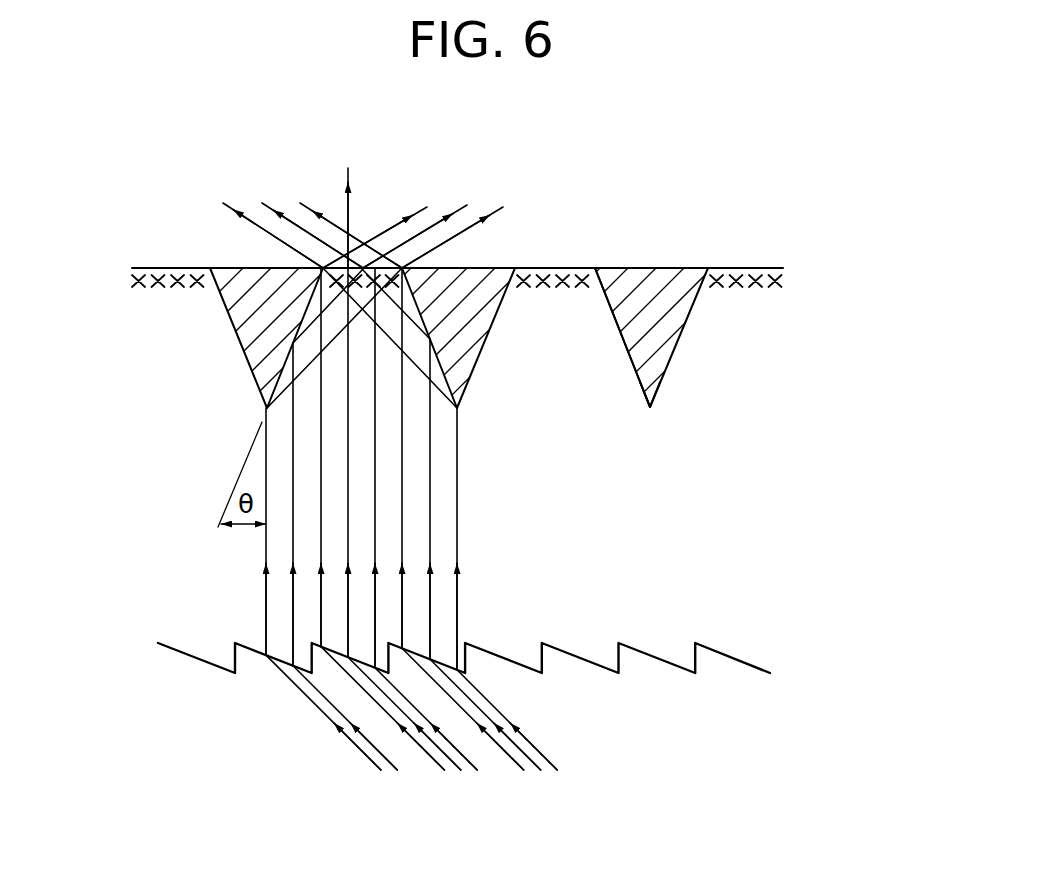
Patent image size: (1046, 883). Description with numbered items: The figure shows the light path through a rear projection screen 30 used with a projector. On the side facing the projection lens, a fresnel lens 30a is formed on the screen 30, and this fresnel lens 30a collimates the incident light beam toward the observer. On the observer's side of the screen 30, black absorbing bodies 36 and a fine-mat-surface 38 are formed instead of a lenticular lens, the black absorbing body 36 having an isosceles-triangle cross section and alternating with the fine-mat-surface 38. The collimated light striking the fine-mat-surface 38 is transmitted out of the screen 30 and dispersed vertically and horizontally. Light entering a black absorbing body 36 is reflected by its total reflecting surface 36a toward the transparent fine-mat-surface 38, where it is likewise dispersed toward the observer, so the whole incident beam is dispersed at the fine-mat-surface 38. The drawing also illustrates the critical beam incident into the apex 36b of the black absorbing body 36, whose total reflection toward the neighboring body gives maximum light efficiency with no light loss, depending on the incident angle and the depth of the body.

The screen 30 is at (727, 502).
The fresnel lens 30a is at (620, 646).
The black absorbing body 36 is at (653, 308).
The total reflecting surface 36a is at (622, 338).
The apex 36b is at (650, 410).
The fine-mat-surface 38 is at (737, 293).